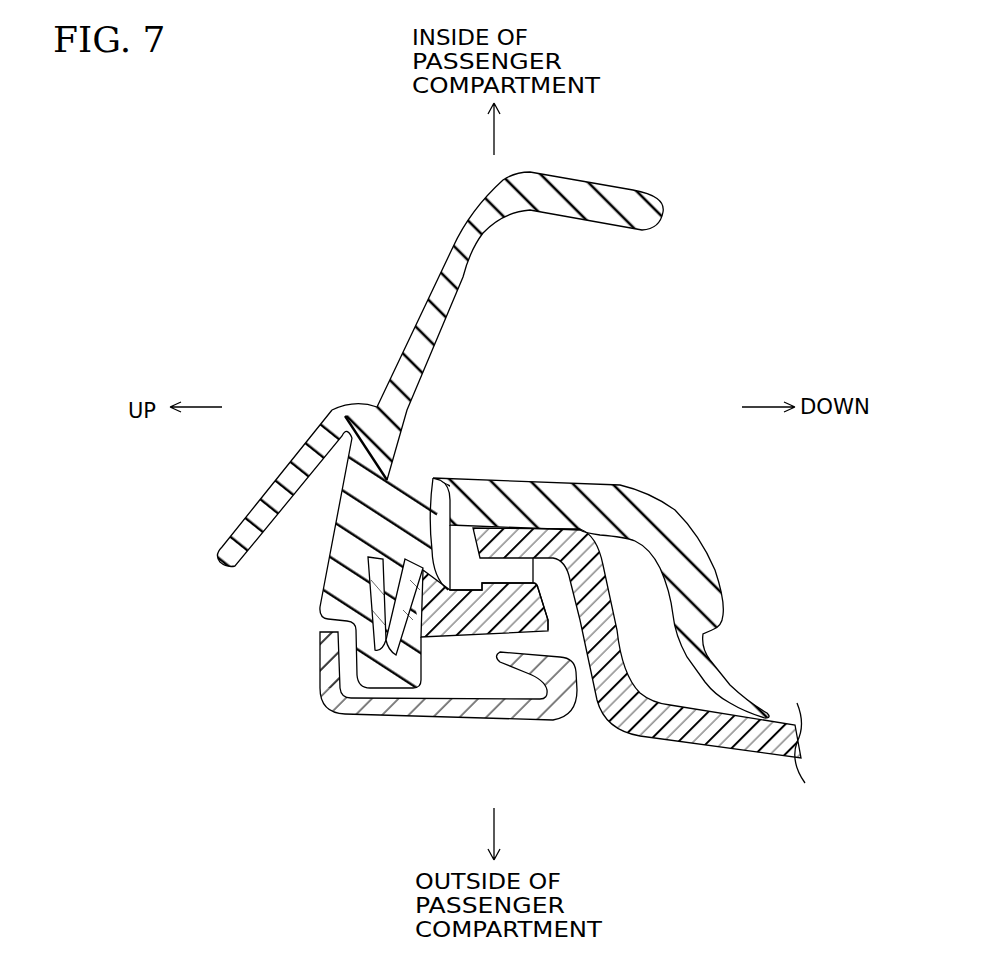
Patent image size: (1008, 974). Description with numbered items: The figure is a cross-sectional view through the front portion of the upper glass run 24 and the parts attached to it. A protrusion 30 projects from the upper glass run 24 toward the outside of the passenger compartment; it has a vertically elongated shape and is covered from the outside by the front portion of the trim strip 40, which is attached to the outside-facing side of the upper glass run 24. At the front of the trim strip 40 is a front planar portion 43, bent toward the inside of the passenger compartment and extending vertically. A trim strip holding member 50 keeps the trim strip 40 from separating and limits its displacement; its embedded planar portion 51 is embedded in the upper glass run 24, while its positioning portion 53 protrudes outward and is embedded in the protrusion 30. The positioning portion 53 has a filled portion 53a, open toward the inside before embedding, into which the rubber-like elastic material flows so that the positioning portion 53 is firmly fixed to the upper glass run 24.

The upper glass run 24 is at (366, 381).
The protrusion 30 is at (424, 660).
The trim strip 40 is at (400, 733).
The front planar portion 43 is at (320, 652).
The trim strip holding member 50 is at (553, 550).
The embedded planar portion 51 is at (430, 568).
The positioning portion 53 is at (350, 573).
The filled portion 53a is at (389, 552).